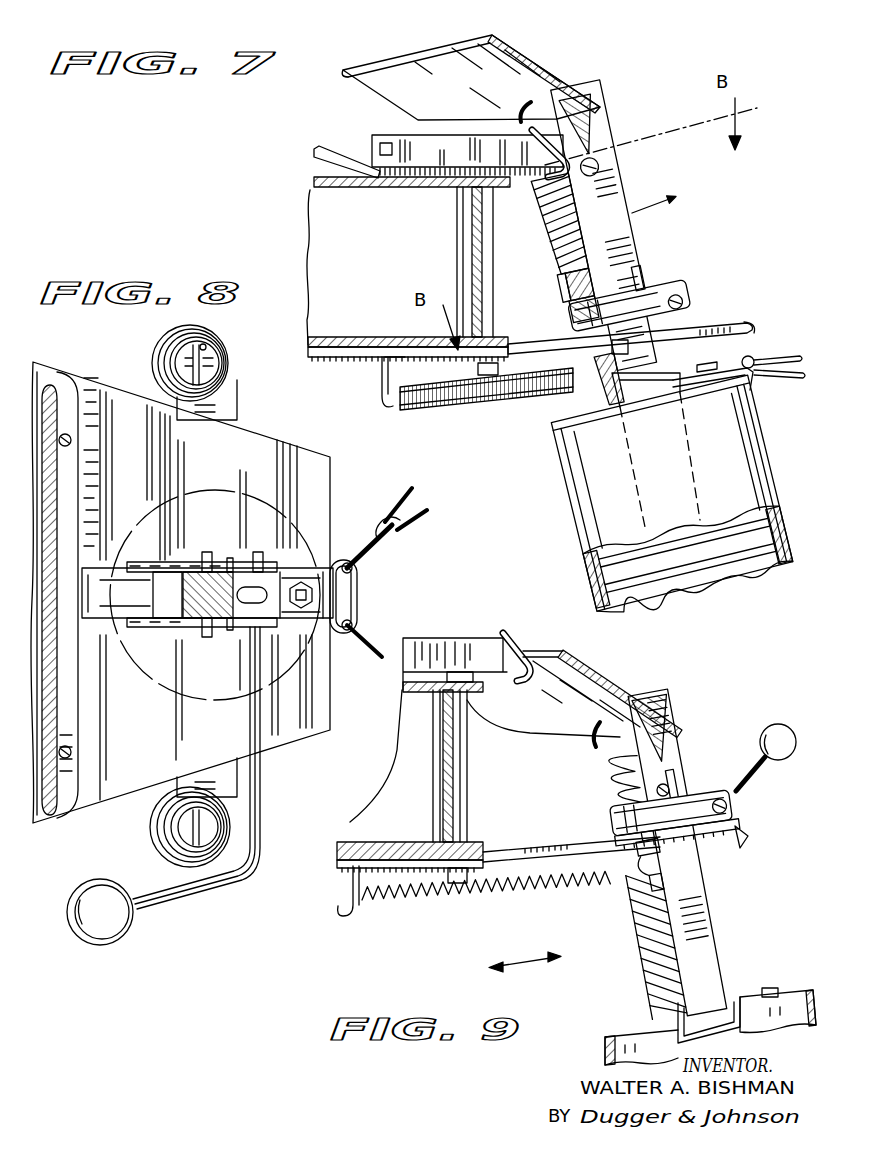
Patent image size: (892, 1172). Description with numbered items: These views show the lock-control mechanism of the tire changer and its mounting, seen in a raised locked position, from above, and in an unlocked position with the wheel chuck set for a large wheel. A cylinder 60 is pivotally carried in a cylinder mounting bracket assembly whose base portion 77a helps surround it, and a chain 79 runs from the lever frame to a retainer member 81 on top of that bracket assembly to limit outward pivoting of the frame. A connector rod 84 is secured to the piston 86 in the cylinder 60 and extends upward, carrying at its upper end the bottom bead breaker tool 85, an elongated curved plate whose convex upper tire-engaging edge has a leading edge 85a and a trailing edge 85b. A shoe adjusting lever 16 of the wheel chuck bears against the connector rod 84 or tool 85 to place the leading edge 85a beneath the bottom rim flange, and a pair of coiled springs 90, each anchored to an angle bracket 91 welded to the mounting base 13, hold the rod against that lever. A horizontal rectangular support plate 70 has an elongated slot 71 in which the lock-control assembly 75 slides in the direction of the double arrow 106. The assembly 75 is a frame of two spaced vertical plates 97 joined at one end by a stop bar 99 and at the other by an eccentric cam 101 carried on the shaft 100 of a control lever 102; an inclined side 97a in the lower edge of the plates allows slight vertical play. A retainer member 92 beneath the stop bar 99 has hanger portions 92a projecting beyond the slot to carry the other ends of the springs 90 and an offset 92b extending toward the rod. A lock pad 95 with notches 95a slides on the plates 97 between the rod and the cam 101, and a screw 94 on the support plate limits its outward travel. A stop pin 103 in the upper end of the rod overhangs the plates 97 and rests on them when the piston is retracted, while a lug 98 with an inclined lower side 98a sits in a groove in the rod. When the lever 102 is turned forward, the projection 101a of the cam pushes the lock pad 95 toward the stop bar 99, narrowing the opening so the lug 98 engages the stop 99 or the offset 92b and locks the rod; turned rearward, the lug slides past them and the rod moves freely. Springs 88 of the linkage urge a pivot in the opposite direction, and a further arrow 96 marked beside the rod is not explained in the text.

In FIG. 9, the mounting base 13 is at (440, 806).
In FIG. 7, the shoe adjusting lever 16 is at (601, 130).
In FIG. 9, the shoe adjusting lever 16 is at (517, 621).
In FIG. 7, the cylinder 60 is at (753, 468).
In FIG. 8, the cylinder 60 is at (180, 698).
In FIG. 7, the rectangular support plate 70 is at (747, 323).
In FIG. 8, the rectangular support plate 70 is at (332, 472).
In FIG. 9, the rectangular support plate 70 is at (498, 854).
In FIG. 8, the elongated rectangular slot 71 is at (110, 567).
In FIG. 9, the lock-control assembly 75 is at (698, 790).
In FIG. 8, the base portion 77a is at (227, 410).
In FIG. 7, the chain 79 is at (805, 345).
In FIG. 8, the chain 79 is at (420, 510).
In FIG. 7, the retainer member 81 is at (750, 390).
In FIG. 8, the retainer member 81 is at (330, 608).
In FIG. 9, the retainer member 81 is at (733, 1007).
In FIG. 7, the connector rod 84 is at (623, 263).
In FIG. 8, the connector rod 84 is at (223, 567).
In FIG. 7, the bottom bead breaker tool 85 is at (535, 64).
In FIG. 7, the leading edge 85a is at (496, 37).
In FIG. 9, the leading edge 85a is at (560, 649).
In FIG. 7, the trailing edge 85b is at (378, 54).
In FIG. 7, the piston 86 is at (721, 572).
In FIG. 8, the springs 88 is at (220, 353).
In FIG. 9, the springs 88 is at (637, 958).
In FIG. 7, the coiled springs 90 is at (420, 410).
In FIG. 9, the coiled springs 90 is at (507, 902).
In FIG. 7, the angle bracket 91 is at (380, 380).
In FIG. 9, the angle bracket 91 is at (347, 892).
In FIG. 9, the retainer member 92 is at (583, 840).
In FIG. 9, the hanger portions 92a is at (623, 897).
In FIG. 7, the offset 92b is at (610, 406).
In FIG. 7, the screw 94 is at (757, 331).
In FIG. 7, the lock pad 95 is at (645, 277).
In FIG. 8, the lock pad 95 is at (237, 567).
In FIG. 9, the lock pad 95 is at (677, 778).
In FIG. 9, the notches 95a is at (707, 837).
In FIG. 7, the direction of movement 96 is at (661, 204).
In FIG. 8, the vertical plates 97 is at (150, 568).
In FIG. 9, the vertical plates 97 is at (578, 820).
In FIG. 7, the inclined side 97a is at (568, 327).
In FIG. 7, the lug 98 is at (593, 265).
In FIG. 8, the lug 98 is at (183, 567).
In FIG. 9, the lug 98 is at (700, 888).
In FIG. 7, the lower inwardly inclined side 98a is at (580, 273).
In FIG. 7, the stop bar 99 is at (583, 294).
In FIG. 8, the stop bar 99 is at (157, 608).
In FIG. 9, the stop bar 99 is at (607, 793).
In FIG. 7, the shaft 100 is at (692, 289).
In FIG. 8, the shaft 100 is at (262, 787).
In FIG. 8, the eccentric cam 101 is at (285, 570).
In FIG. 9, the eccentric cam 101 is at (747, 805).
In FIG. 8, the projection 101a is at (250, 607).
In FIG. 9, the projection 101a is at (747, 820).
In FIG. 7, the control lever 102 is at (655, 349).
In FIG. 8, the control lever 102 is at (110, 940).
In FIG. 9, the control lever 102 is at (753, 781).
In FIG. 7, the stop pin 103 is at (599, 166).
In FIG. 8, the stop pin 103 is at (203, 632).
In FIG. 9, the stop pin 103 is at (665, 783).
In FIG. 9, the double arrow 106 is at (527, 966).